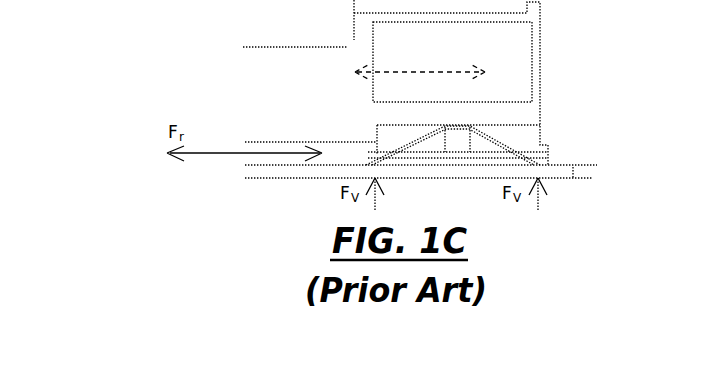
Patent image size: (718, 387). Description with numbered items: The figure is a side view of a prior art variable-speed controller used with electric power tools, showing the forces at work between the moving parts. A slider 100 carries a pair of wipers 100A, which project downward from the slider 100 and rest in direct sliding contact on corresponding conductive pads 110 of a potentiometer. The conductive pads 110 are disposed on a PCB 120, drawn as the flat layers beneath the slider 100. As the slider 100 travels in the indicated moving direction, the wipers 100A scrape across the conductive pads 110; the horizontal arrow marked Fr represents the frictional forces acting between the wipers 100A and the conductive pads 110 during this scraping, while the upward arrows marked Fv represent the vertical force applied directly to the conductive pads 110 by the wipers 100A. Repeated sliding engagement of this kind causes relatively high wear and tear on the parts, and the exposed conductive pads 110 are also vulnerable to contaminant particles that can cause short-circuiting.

The slider 100 is at (287, 85).
The wipers 100A is at (513, 142).
The conductive pads 110 is at (538, 172).
The PCB 120 is at (255, 165).